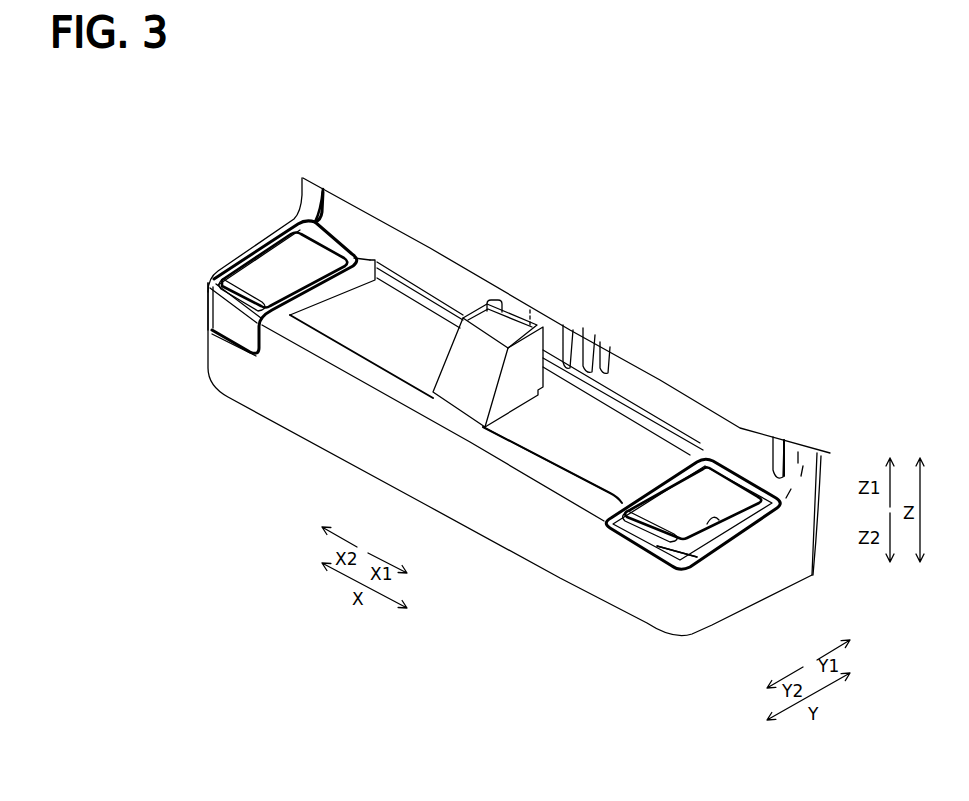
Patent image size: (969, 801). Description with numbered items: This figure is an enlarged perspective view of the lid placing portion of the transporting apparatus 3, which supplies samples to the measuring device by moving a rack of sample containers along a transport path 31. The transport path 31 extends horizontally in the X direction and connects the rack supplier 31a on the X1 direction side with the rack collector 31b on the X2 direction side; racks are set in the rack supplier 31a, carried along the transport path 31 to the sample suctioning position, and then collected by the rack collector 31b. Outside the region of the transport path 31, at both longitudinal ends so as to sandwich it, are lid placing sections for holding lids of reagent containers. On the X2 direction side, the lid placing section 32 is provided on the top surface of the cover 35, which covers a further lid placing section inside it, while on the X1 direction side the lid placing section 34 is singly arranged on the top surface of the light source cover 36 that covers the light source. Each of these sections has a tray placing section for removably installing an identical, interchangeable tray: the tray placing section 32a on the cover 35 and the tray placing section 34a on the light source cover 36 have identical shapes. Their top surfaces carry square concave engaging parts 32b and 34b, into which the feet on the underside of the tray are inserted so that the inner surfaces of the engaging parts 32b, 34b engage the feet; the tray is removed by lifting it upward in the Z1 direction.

The transporting apparatus 3 is at (686, 421).
The transport path 31 is at (593, 422).
The rack supplier 31a is at (558, 452).
The rack collector 31b is at (375, 340).
The lid placing section 32 is at (246, 236).
The tray placing section 32a is at (313, 258).
The engaging part 32b is at (240, 262).
The lid placing section 34 is at (755, 517).
The tray placing section 34a is at (717, 487).
The engaging part 34b is at (713, 524).
The cover 35 is at (226, 318).
The light source cover 36 is at (697, 557).